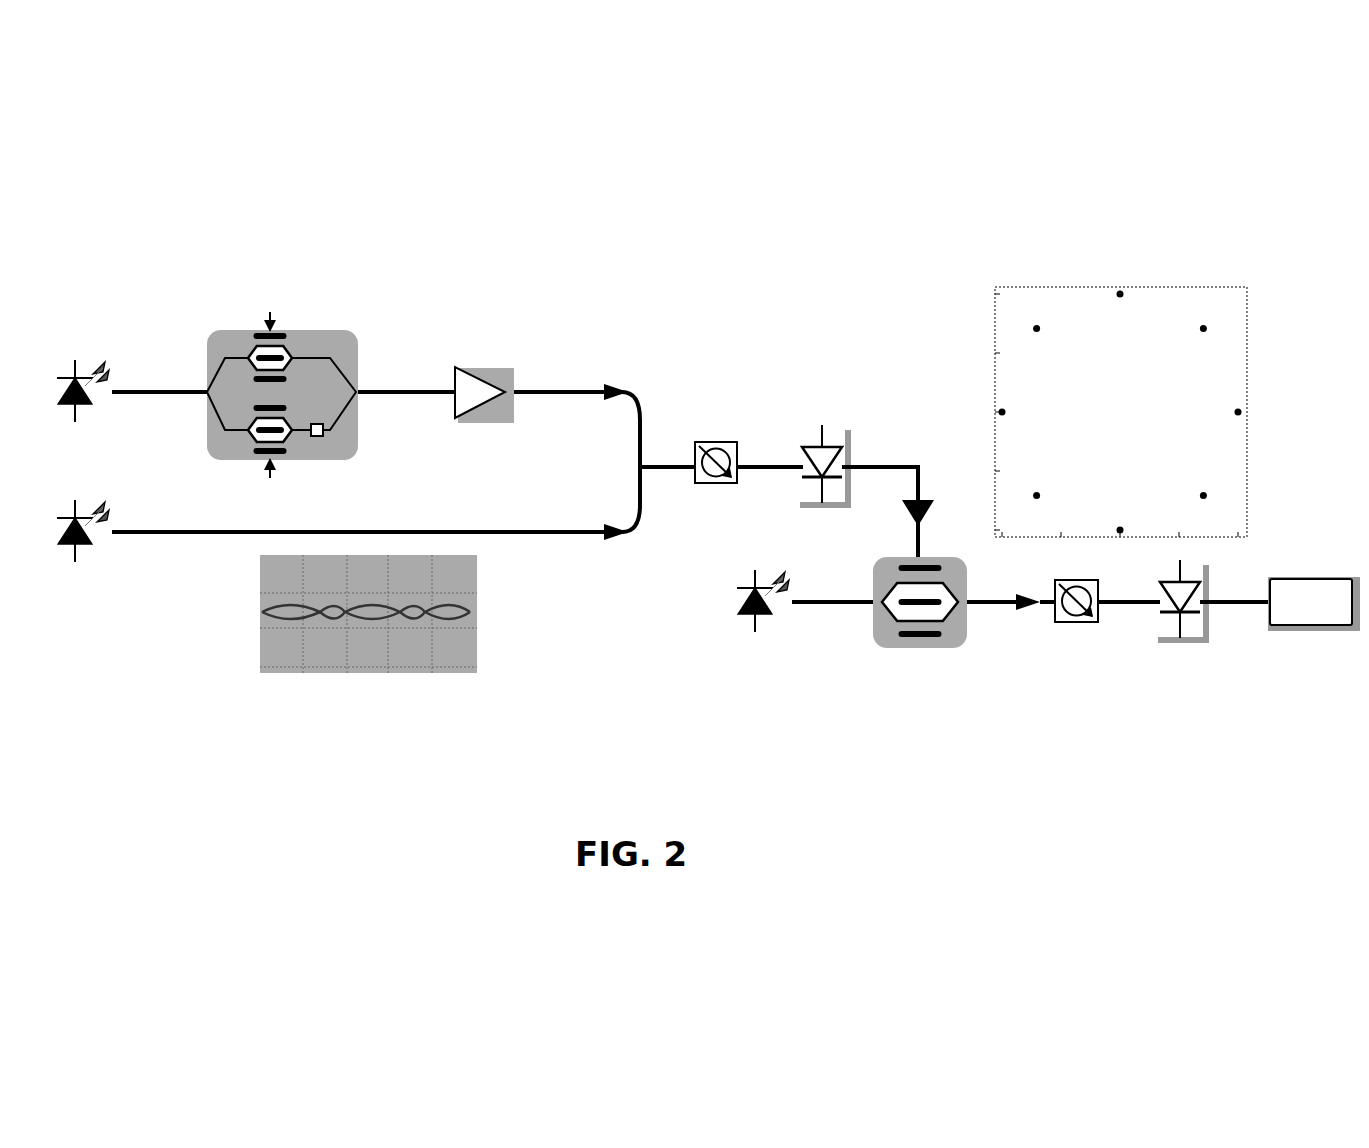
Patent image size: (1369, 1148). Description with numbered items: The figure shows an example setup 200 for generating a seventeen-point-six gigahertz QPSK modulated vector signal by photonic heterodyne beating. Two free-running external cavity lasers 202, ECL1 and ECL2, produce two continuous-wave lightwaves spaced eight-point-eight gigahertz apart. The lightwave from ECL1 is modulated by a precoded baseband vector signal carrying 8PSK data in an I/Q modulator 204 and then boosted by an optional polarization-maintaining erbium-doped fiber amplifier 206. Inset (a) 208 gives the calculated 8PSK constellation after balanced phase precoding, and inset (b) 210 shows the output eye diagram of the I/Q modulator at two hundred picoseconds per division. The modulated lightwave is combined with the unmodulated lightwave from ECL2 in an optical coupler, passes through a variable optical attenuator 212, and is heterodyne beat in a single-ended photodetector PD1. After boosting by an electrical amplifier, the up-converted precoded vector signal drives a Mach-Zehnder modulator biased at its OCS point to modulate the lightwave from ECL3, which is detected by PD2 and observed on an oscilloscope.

The setup 200 is at (714, 150).
The external cavity lasers 202 is at (92, 608).
The I/Q modulator 204 is at (203, 338).
The polarization-maintaining erbium-doped fiber amplifier 206 is at (478, 367).
The inset (a) 208 is at (1003, 328).
The inset (b) 210 is at (402, 668).
The variable optical attenuator 212 is at (691, 406).